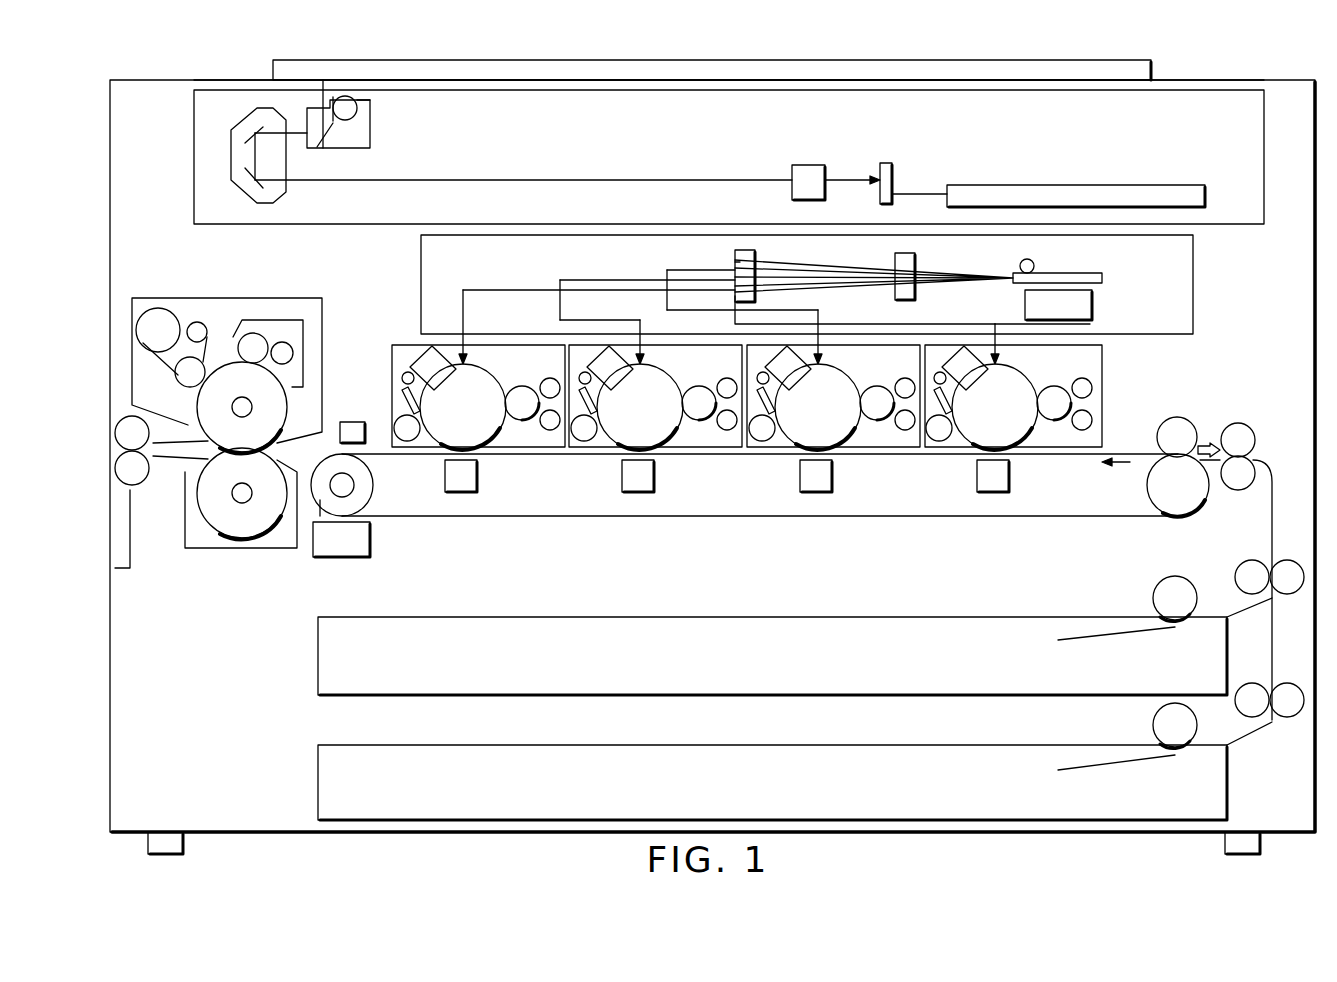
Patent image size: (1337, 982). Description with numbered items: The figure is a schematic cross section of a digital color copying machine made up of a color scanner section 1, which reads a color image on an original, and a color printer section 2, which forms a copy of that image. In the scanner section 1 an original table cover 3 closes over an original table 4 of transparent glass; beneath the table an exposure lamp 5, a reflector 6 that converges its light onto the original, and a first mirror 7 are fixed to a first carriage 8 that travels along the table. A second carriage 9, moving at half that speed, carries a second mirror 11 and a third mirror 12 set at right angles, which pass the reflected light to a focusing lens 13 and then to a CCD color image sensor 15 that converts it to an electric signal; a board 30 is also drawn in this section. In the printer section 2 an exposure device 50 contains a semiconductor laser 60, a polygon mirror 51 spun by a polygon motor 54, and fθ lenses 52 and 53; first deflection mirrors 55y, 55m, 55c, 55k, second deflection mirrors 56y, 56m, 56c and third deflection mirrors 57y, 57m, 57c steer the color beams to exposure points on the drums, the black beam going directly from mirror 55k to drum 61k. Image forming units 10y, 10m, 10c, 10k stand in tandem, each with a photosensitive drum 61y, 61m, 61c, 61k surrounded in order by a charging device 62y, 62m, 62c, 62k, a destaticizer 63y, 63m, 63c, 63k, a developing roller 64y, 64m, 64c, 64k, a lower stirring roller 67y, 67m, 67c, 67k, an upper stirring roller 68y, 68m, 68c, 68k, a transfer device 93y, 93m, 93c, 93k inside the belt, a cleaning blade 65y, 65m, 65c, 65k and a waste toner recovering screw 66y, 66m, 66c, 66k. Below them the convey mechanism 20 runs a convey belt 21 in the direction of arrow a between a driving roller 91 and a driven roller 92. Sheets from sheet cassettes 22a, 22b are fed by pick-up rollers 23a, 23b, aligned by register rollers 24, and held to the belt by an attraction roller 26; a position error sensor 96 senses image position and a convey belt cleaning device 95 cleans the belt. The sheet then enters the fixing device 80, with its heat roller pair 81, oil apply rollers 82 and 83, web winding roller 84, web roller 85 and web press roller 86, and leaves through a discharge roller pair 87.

The color scanner section 1 is at (596, 98).
The color printer section 2 is at (376, 282).
The original table cover 3 is at (490, 70).
The original table 4 is at (538, 85).
The exposure lamp 5 is at (358, 108).
The reflector 6 is at (370, 128).
The first mirror 7 is at (330, 140).
The first carriage 8 is at (372, 118).
The second carriage 9 is at (284, 190).
The second mirror 11 is at (251, 124).
The third mirror 12 is at (249, 188).
The focusing lens 13 is at (806, 165).
The CCD color image sensor 15 is at (886, 163).
The image processing unit 30 is at (1046, 185).
The exposure device 50 is at (1194, 281).
The polygon mirror 51 is at (1103, 278).
The fθ lens 52 is at (916, 270).
The fθ lens 53 is at (757, 262).
The polygon motor 54 is at (1094, 300).
The first deflection mirror 55k is at (463, 288).
The first deflection mirror 55c is at (558, 280).
The first deflection mirror 55m is at (678, 256).
The first deflection mirror 55y is at (732, 258).
The second deflection mirror 56c is at (560, 312).
The second deflection mirror 56m is at (667, 274).
The second deflection mirror 56y is at (742, 326).
The third deflection mirror 57c is at (640, 318).
The third deflection mirror 57m is at (820, 312).
The third deflection mirror 57y is at (1092, 312).
The semiconductor laser 60 is at (1034, 266).
The fourth image forming unit 10k is at (502, 448).
The third image forming unit 10c is at (678, 448).
The second image forming unit 10m is at (858, 448).
The first image forming unit 10y is at (1032, 450).
The photosensitive drum 61k is at (479, 362).
The photosensitive drum 61c is at (671, 380).
The photosensitive drum 61m is at (846, 384).
The photosensitive drum 61y is at (1027, 380).
The charging device 62k is at (428, 348).
The charging device 62c is at (638, 348).
The charging device 62m is at (822, 348).
The charging device 62y is at (996, 342).
The destaticizer 63k is at (402, 376).
The destaticizer 63c is at (586, 372).
The destaticizer 63m is at (766, 372).
The destaticizer 63y is at (940, 372).
The developing roller 64k is at (520, 422).
The developing roller 64c is at (699, 421).
The developing roller 64m is at (878, 421).
The developing roller 64y is at (1054, 421).
The cleaning blade 65k is at (402, 393).
The cleaning blade 65c is at (592, 416).
The cleaning blade 65m is at (770, 416).
The cleaning blade 65y is at (946, 416).
The waste toner recovering screw 66k is at (394, 424).
The waste toner recovering screw 66c is at (590, 442).
The waste toner recovering screw 66m is at (763, 442).
The waste toner recovering screw 66y is at (940, 442).
The lower stirring roller 67k is at (548, 431).
The lower stirring roller 67c is at (726, 431).
The lower stirring roller 67m is at (905, 431).
The lower stirring roller 67y is at (1082, 431).
The upper stirring roller 68k is at (544, 380).
The upper stirring roller 68c is at (740, 430).
The upper stirring roller 68m is at (901, 384).
The upper stirring roller 68y is at (1093, 388).
The transfer device 93k is at (458, 493).
The transfer device 93c is at (636, 493).
The transfer device 93m is at (814, 493).
The transfer device 93y is at (990, 493).
The convey mechanism 20 is at (1068, 517).
The convey belt 21 is at (1128, 455).
The arrow a is at (1126, 470).
The driven roller 92 is at (1150, 506).
The position error sensor 96 is at (372, 466).
The driving roller 91 is at (376, 516).
The convey belt cleaning device 95 is at (342, 558).
The attraction roller 26 is at (1182, 418).
The register rollers 24 is at (1240, 423).
The sheet cassette 22a is at (318, 657).
The sheet cassette 22b is at (318, 775).
The pick-up roller 23a is at (1153, 598).
The pick-up roller 23b is at (1153, 727).
The fixing device 80 is at (332, 328).
The heat roller pair 81 is at (241, 540).
The oil apply roller 82 is at (283, 342).
The oil apply roller 83 is at (253, 333).
The web winding roller 84 is at (197, 322).
The web roller 85 is at (158, 308).
The web press roller 86 is at (176, 378).
The discharge roller pair 87 is at (140, 484).